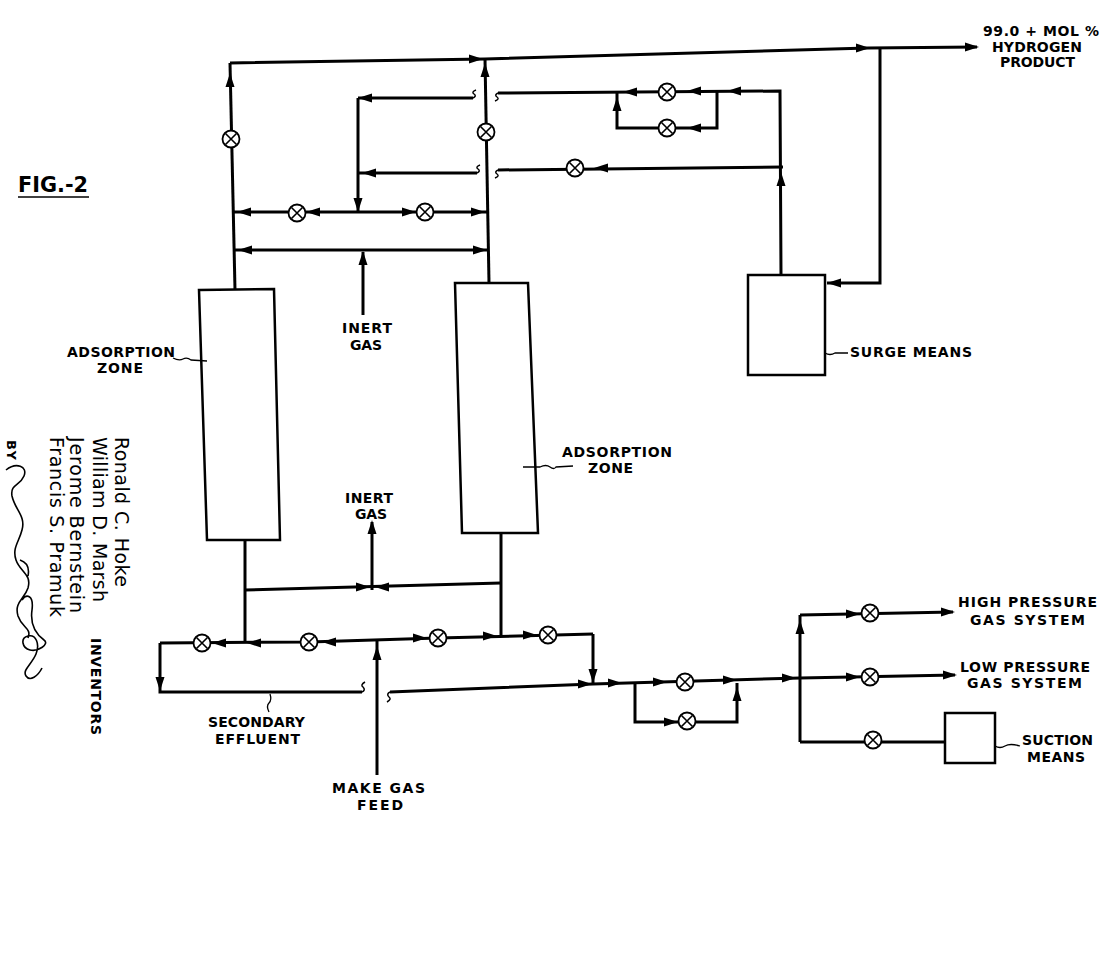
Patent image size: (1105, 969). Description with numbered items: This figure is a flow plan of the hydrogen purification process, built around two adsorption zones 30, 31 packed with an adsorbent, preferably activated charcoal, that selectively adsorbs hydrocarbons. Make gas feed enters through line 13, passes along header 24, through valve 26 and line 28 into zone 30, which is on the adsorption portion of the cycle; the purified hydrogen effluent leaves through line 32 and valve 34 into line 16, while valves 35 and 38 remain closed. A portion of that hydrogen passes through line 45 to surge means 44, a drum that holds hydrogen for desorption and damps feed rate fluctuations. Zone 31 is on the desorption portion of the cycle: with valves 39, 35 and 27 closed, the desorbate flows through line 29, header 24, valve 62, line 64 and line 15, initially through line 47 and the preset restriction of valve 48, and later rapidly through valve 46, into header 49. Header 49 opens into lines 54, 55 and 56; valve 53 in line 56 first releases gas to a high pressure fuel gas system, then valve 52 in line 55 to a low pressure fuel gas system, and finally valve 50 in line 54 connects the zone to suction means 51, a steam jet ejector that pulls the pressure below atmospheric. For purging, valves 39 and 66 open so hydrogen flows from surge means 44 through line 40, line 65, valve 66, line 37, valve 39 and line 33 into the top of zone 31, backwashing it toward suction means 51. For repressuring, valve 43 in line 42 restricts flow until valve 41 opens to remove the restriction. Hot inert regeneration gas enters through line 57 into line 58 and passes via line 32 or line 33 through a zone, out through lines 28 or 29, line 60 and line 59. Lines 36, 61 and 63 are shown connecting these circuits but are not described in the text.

The line 13 is at (380, 733).
The line 15 is at (508, 689).
The line 16 is at (605, 47).
The header 24 is at (383, 638).
The valve 26 is at (441, 629).
The valve 27 is at (306, 633).
The line 28 is at (503, 560).
The line 29 is at (245, 570).
The zone 30 is at (465, 407).
The zone 31 is at (270, 407).
The line 32 is at (491, 231).
The line 33 is at (232, 238).
The valve 34 is at (496, 132).
The valve 35 is at (221, 139).
The cross line 36 is at (363, 215).
The line 37 is at (339, 209).
The valve 38 is at (431, 204).
The valve 39 is at (289, 205).
The line 40 is at (784, 99).
The valve 41 is at (672, 84).
The line 42 is at (719, 118).
The valve 43 is at (672, 136).
The surge means 44 is at (748, 352).
The line 45 is at (884, 168).
The valve 46 is at (687, 673).
The line 47 is at (633, 713).
The valve 48 is at (688, 730).
The header 49 is at (798, 645).
The valve 50 is at (865, 733).
The suction means 51 is at (966, 764).
The valve 52 is at (873, 668).
The valve 53 is at (869, 602).
The line 54 is at (902, 739).
The line 55 is at (828, 675).
The line 56 is at (906, 611).
The line 57 is at (365, 284).
The line 58 is at (346, 248).
The line 59 is at (374, 549).
The line 60 is at (357, 592).
The valve 61 is at (549, 624).
The valve 62 is at (201, 631).
The effluent line 63 is at (596, 646).
The line 64 is at (162, 669).
The line 65 is at (669, 170).
The valve 66 is at (578, 177).